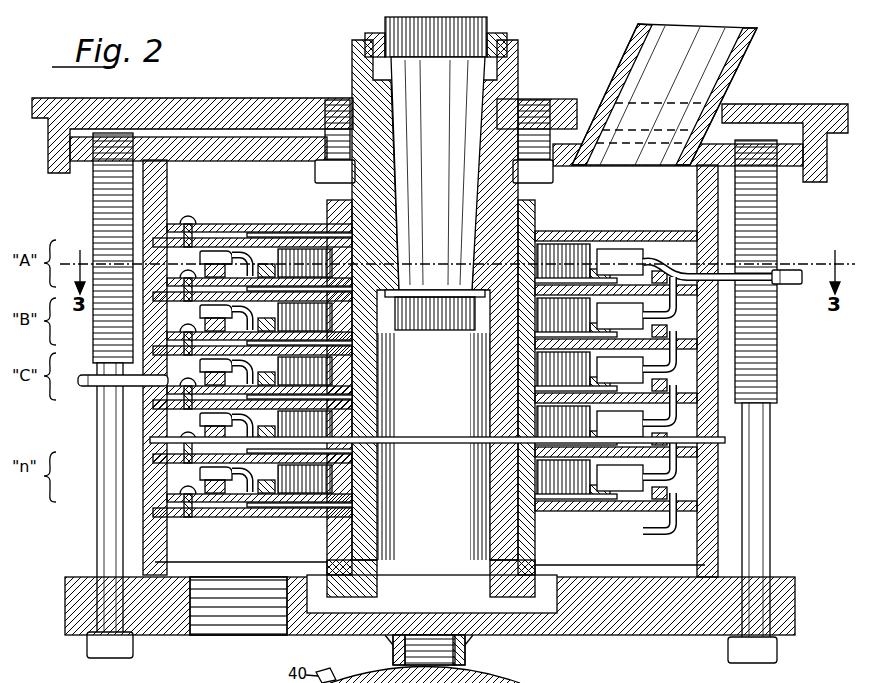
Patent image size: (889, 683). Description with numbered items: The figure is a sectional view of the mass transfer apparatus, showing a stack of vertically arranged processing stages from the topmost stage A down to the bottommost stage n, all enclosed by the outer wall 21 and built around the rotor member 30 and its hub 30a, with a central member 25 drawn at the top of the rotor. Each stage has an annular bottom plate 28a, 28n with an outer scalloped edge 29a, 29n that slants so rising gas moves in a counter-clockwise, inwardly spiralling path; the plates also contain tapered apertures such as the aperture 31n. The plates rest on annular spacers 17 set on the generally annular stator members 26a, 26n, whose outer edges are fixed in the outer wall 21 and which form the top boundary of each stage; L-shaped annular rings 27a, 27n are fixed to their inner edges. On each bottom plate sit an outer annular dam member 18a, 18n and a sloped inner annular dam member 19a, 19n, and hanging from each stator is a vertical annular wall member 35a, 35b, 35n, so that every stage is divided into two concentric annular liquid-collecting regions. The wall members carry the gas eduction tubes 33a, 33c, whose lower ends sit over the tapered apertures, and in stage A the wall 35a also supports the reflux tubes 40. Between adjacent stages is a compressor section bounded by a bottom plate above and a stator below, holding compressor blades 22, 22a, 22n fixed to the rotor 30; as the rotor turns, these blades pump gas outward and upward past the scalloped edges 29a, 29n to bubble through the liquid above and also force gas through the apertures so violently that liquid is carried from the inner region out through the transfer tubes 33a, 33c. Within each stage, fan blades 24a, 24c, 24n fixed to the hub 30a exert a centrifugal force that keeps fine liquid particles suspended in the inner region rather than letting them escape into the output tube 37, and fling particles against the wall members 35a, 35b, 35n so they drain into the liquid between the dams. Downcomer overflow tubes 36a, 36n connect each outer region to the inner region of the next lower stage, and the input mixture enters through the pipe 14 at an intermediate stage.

The pipe 14 is at (89, 388).
The annular spacers 17 is at (192, 226).
The outer annular dam member 18a is at (213, 250).
The outer annular dam member 18n is at (214, 496).
The inner annular dam member 19a is at (263, 262).
The inner annular dam member 19n is at (264, 496).
The outer wall 21 is at (705, 495).
The compressor blades 22 is at (592, 268).
The compressor blades 22a is at (226, 326).
The compressor blades 22n is at (605, 512).
The fan blades 24a is at (552, 258).
The fan blades 24c is at (566, 380).
The fan blades 24n is at (556, 473).
The central tube 25 is at (432, 103).
The stator member 26a is at (668, 233).
The stator member 26n is at (165, 456).
The annular ring 27a is at (612, 276).
The annular ring 27n is at (576, 502).
The annular bottom plate 28a is at (584, 298).
The annular bottom plate 28n is at (303, 496).
The outer scalloped edge 29a is at (168, 282).
The outer scalloped edge 29n is at (196, 506).
The rotor member 30 is at (522, 200).
The hub 30a is at (330, 215).
The upwardly tapering aperture 31n is at (237, 498).
The gas eduction tube 33a is at (240, 252).
The gas eduction tube 33c is at (204, 386).
The vertical annular wall member 35a is at (625, 256).
The vertical annular wall member 35b is at (633, 326).
The vertical annular wall member 35n is at (633, 476).
The downcomer overflow tube 36a is at (672, 313).
The downcomer overflow tube 36n is at (661, 528).
The output tube 37 is at (690, 72).
The reflux tubes 40 is at (790, 284).